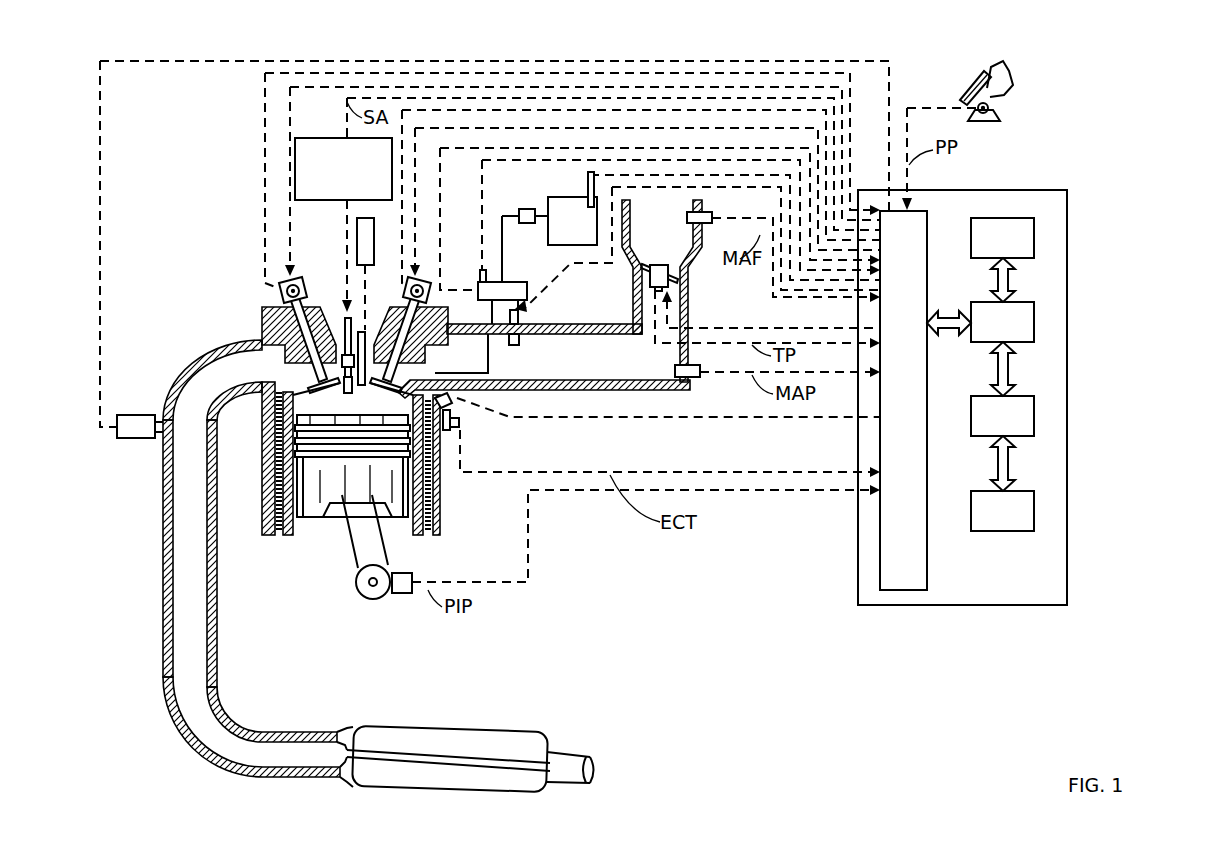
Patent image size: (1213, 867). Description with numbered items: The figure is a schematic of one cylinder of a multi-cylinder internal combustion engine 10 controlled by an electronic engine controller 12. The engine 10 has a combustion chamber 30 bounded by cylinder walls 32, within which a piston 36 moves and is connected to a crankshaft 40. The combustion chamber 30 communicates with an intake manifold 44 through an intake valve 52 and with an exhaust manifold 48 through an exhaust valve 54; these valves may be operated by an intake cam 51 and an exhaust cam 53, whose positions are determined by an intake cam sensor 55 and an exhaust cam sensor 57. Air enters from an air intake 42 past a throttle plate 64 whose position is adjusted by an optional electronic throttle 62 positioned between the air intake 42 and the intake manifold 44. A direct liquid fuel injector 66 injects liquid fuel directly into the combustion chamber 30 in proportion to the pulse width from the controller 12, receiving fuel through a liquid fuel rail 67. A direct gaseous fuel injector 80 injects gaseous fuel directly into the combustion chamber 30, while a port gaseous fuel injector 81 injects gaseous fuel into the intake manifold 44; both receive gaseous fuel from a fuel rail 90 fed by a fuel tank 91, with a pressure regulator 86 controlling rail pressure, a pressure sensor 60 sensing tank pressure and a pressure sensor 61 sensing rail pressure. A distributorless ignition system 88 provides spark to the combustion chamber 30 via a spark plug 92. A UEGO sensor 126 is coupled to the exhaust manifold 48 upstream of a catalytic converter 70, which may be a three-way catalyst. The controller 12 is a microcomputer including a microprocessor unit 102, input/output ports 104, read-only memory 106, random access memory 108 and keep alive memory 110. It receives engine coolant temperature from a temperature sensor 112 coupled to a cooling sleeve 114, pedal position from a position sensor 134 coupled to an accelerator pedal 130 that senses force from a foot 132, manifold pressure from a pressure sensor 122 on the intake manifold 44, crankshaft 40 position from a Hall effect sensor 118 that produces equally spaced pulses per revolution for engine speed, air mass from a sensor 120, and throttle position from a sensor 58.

The internal combustion engine 10 is at (200, 266).
The electronic engine controller 12 is at (1062, 190).
The combustion chamber 30 is at (350, 405).
The cylinder walls 32 is at (300, 540).
The piston 36 is at (335, 520).
The crankshaft 40 is at (360, 600).
The air intake 42 is at (662, 291).
The intake manifold 44 is at (544, 361).
The exhaust manifold 48 is at (258, 563).
The intake cam 51 is at (410, 280).
The intake valve 52 is at (400, 372).
The exhaust cam 53 is at (299, 278).
The exhaust valve 54 is at (266, 343).
The intake cam sensor 55 is at (428, 296).
The exhaust cam sensor 57 is at (280, 295).
The throttle position sensor 58 is at (645, 290).
The pressure sensor 60 is at (588, 190).
The pressure sensor 61 is at (480, 272).
The electronic throttle 62 is at (668, 270).
The throttle plate 64 is at (643, 267).
The direct liquid fuel injector 66 is at (364, 332).
The fuel rail 67 is at (357, 240).
The catalytic converter 70 is at (362, 730).
The direct gaseous fuel injector 80 is at (455, 400).
The port gaseous fuel injector 81 is at (519, 344).
The pressure regulator 86 is at (519, 213).
The distributorless ignition system 88 is at (316, 138).
The fuel rail 90 is at (505, 282).
The fuel tank 91 is at (572, 221).
The spark plug 92 is at (340, 318).
The microprocessor unit 102 is at (1035, 322).
The input/output ports 104 is at (929, 213).
The read-only memory 106 is at (1035, 236).
The random access memory 108 is at (1035, 414).
The keep alive memory 110 is at (1035, 508).
The temperature sensor 112 is at (460, 430).
The cooling sleeve 114 is at (432, 492).
The Hall effect sensor 118 is at (400, 594).
The air mass sensor 120 is at (708, 212).
The pressure sensor 122 is at (697, 378).
The Universal Exhaust Gas Oxygen (UEGO) sensor 126 is at (115, 438).
The accelerator pedal 130 is at (965, 88).
The foot 132 is at (1008, 72).
The position sensor 134 is at (1003, 118).